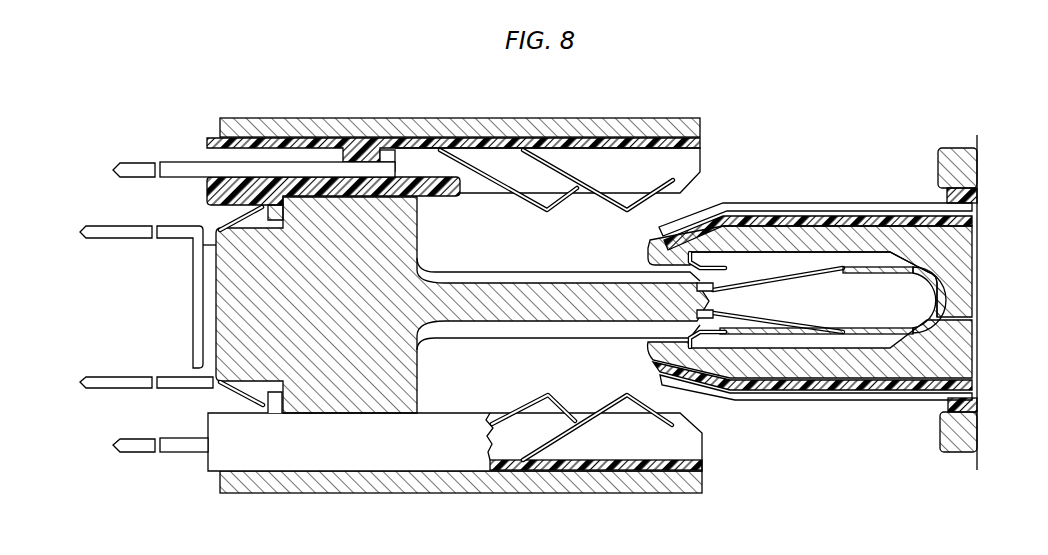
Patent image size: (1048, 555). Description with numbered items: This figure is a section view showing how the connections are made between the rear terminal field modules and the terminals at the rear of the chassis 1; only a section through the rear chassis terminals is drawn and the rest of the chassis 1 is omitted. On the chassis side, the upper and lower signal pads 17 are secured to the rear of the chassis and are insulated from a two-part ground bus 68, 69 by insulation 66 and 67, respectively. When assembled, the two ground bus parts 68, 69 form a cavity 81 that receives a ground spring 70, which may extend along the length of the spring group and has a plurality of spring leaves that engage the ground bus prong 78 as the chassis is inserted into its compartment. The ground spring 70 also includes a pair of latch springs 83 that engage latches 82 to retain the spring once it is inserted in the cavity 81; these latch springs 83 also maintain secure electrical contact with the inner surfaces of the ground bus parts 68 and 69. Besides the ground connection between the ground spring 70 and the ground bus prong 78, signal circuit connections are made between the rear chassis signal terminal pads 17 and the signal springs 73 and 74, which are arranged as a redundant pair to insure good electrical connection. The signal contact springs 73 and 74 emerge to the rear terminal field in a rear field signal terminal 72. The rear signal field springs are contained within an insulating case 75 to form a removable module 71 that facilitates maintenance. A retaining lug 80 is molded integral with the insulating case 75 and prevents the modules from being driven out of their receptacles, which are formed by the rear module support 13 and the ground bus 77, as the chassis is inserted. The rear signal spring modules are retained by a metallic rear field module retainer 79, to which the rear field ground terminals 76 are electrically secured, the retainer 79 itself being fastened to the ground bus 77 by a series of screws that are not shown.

The chassis 1 is at (958, 147).
The rear module support 13 is at (334, 118).
The signal pads 17 is at (891, 203).
The insulation 66 is at (977, 223).
The insulation 67 is at (978, 378).
The ground bus part 68 is at (958, 257).
The ground bus part 69 is at (948, 336).
The ground spring 70 is at (788, 279).
The removable module 71 is at (611, 173).
The rear field signal terminal 72 is at (178, 160).
The signal spring 73 is at (546, 214).
The signal spring 74 is at (625, 214).
The insulating case 75 is at (207, 195).
The rear field ground terminals 76 is at (127, 238).
The ground bus 77 is at (388, 242).
The ground bus prong 78 is at (585, 305).
The rear field module retainer 79 is at (238, 395).
The retaining lug 80 is at (275, 400).
The cavity 81 is at (784, 260).
The latches 82 is at (706, 286).
The latch springs 83 is at (721, 266).